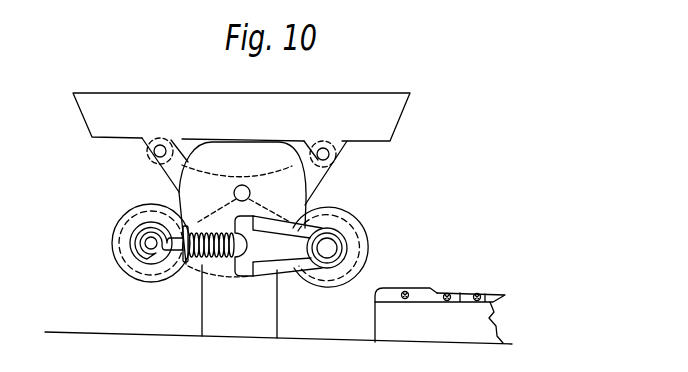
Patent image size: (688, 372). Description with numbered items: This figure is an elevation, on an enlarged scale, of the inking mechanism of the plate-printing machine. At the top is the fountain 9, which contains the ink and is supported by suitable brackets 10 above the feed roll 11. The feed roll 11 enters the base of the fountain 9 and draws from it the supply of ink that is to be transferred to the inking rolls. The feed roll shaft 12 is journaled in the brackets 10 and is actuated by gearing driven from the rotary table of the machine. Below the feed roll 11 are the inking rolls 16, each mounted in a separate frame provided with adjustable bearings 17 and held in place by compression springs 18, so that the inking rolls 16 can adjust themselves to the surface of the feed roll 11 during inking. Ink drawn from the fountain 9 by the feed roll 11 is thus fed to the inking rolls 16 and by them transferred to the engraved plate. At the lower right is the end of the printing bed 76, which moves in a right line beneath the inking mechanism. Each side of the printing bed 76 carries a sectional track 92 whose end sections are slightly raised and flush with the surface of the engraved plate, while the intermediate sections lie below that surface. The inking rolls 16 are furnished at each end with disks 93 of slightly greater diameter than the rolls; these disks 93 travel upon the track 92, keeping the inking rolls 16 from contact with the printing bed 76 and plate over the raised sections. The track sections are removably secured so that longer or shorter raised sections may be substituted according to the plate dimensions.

The fountain 9 is at (393, 114).
The brackets 10 is at (267, 318).
The feed roll 11 is at (277, 161).
The feed roll shaft 12 is at (234, 192).
The inking rolls 16 is at (130, 221).
The adjustable bearings 17 is at (294, 252).
The compression springs 18 is at (203, 265).
The printing bed 76 is at (484, 320).
The sectional track 92 is at (427, 289).
The disks 93 is at (115, 264).